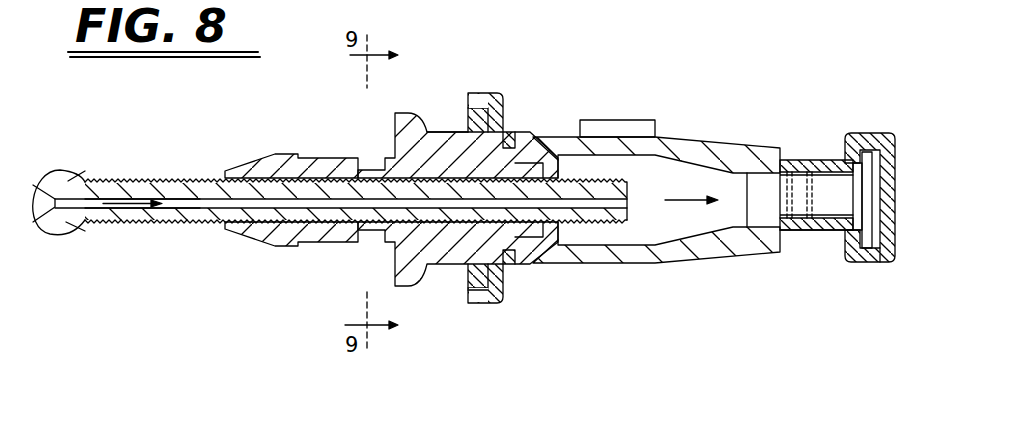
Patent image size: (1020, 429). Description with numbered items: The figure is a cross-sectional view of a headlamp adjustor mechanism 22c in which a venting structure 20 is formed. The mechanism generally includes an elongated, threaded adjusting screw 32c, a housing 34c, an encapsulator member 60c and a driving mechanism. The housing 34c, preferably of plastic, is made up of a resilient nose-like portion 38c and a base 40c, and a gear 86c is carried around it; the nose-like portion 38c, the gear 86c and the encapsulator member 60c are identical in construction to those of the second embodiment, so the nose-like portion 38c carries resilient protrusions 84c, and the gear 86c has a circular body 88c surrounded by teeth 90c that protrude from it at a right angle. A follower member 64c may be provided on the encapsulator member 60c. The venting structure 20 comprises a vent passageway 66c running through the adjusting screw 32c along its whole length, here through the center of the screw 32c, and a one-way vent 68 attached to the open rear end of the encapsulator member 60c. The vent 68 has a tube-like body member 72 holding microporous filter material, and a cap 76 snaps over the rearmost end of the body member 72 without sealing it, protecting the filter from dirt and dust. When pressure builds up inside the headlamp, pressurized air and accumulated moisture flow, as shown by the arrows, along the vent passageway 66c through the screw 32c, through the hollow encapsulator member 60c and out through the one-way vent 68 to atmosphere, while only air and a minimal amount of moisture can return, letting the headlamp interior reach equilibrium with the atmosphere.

The venting structure 20 is at (891, 128).
The headlamp adjustor mechanism 22c is at (408, 113).
The threaded adjusting screw 32c is at (182, 179).
The housing 34c is at (430, 131).
The nose-like portion 38c is at (314, 248).
The base 40c is at (407, 262).
The encapsulator member 60c is at (688, 143).
The key 64c is at (620, 120).
The vent passageway 66c is at (205, 208).
The one-way vent 68 is at (822, 230).
The tube-like body member 72 is at (800, 160).
The cap 76 is at (894, 244).
The upper bushing 84c is at (267, 165).
The gear 86c is at (504, 105).
The lower flange 88c is at (504, 290).
The lower flange ring 90c is at (480, 304).